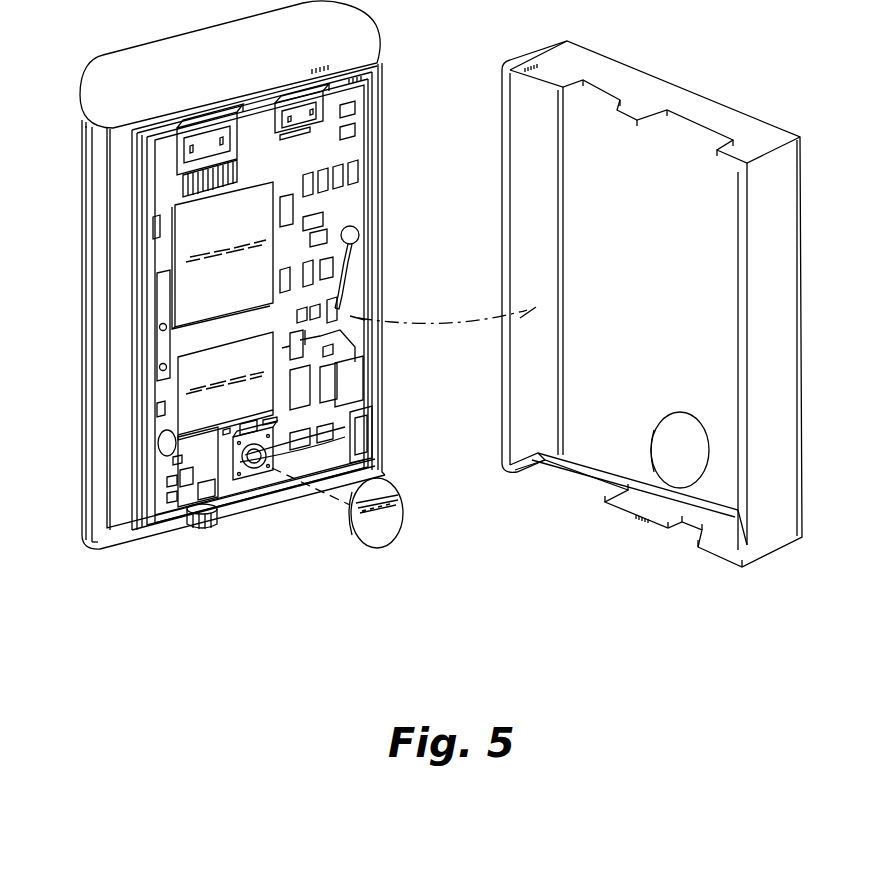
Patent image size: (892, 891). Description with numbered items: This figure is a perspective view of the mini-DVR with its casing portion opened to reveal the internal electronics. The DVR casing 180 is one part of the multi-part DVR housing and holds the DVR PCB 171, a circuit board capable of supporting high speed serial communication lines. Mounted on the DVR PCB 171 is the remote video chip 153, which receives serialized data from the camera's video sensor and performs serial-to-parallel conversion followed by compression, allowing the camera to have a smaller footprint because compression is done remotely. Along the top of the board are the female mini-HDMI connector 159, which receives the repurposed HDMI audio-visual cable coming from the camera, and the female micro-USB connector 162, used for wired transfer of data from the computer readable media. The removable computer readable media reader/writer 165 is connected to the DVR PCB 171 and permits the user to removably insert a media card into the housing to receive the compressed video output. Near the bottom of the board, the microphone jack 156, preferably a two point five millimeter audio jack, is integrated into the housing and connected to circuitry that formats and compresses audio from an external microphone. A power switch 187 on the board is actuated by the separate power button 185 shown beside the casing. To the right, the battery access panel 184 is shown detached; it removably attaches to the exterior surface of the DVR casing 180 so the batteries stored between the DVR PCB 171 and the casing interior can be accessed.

The DVR casing 180 is at (97, 187).
The female mini-HDMI connector 159 is at (203, 112).
The female micro-USB connector 162 is at (297, 88).
The remote video chip 153 is at (236, 301).
The DVR PCB 171 is at (343, 279).
The removable computer readable media reader/writer 165 is at (347, 402).
The power switch 187 is at (254, 468).
The microphone jack 156 is at (198, 522).
The power button 185 is at (387, 533).
The battery access panel 184 is at (717, 110).